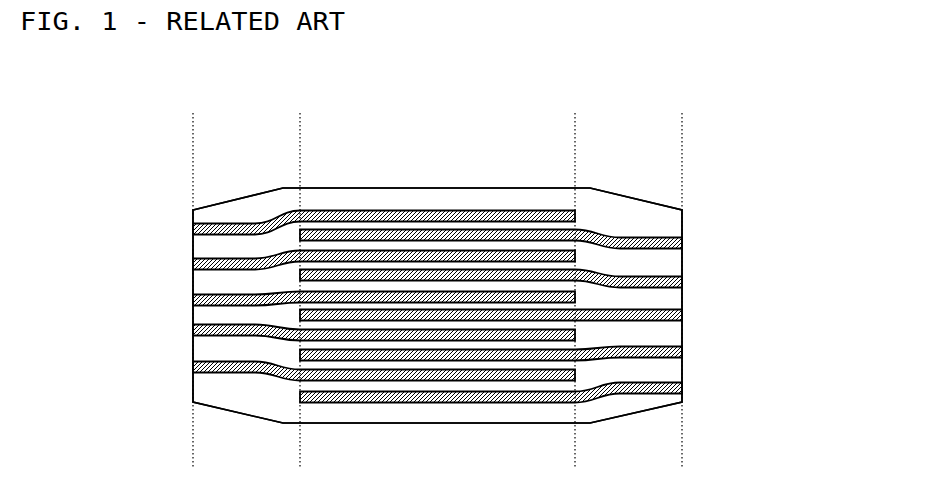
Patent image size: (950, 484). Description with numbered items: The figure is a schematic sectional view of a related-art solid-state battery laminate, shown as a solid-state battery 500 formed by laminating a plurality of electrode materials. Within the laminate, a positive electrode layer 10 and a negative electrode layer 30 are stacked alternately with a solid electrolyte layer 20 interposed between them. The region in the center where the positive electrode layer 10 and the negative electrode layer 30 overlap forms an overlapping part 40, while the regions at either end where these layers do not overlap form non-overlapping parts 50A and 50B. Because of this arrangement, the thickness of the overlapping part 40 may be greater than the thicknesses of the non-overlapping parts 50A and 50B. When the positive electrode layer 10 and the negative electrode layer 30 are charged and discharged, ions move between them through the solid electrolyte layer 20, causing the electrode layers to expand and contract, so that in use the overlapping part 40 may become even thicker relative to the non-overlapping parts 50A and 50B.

The solid-state battery 500 is at (757, 133).
The positive electrode layer 10 is at (672, 243).
The solid electrolyte layer 20 is at (672, 263).
The negative electrode layer 30 is at (560, 296).
The overlapping part 40 is at (575, 158).
The non-overlapping part 50A is at (682, 132).
The non-overlapping part 50B is at (300, 132).